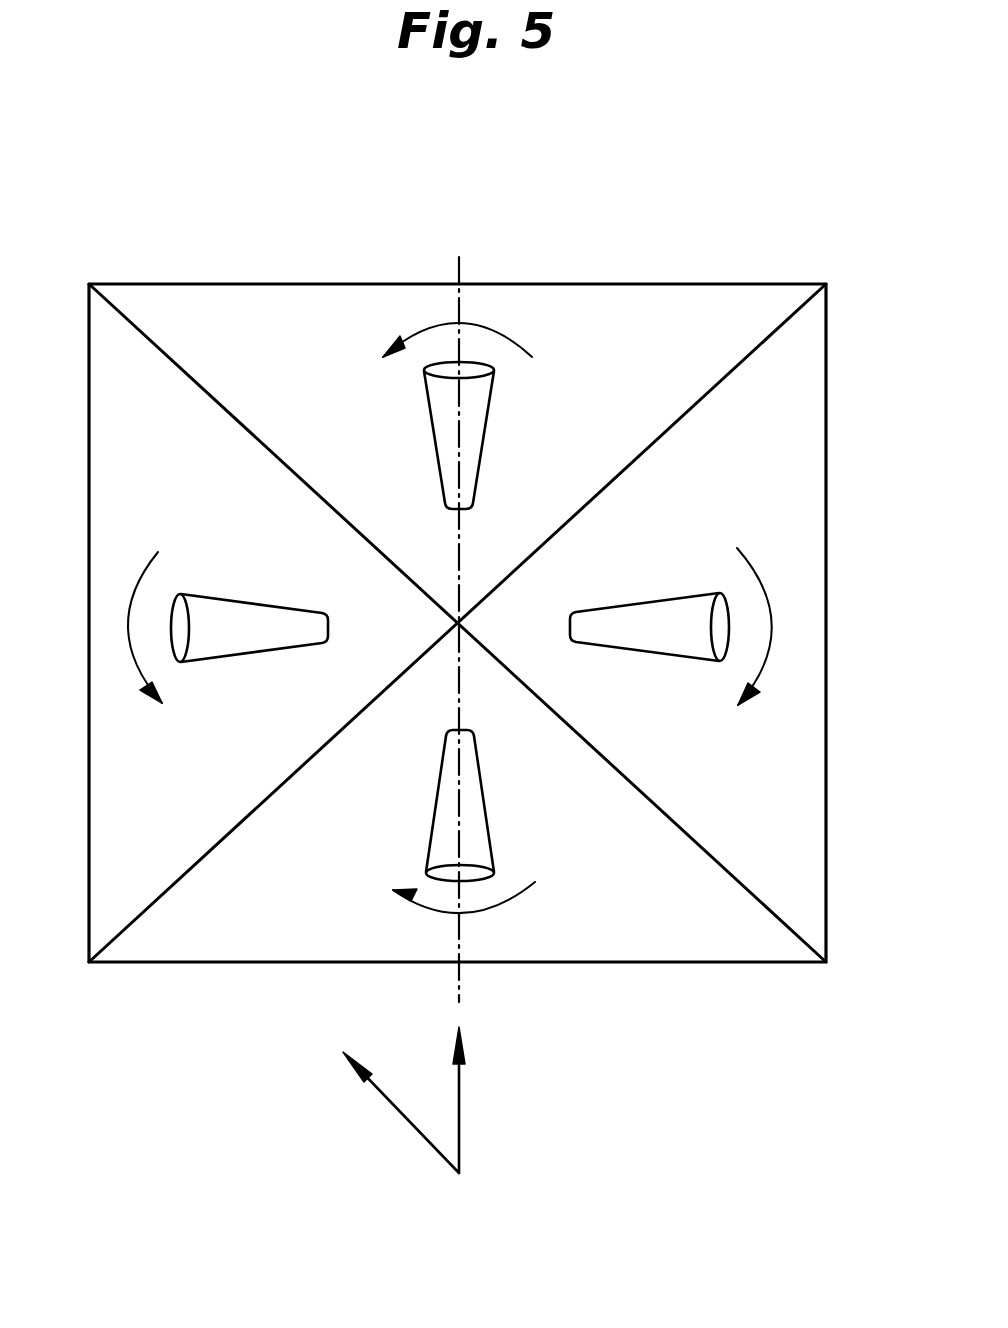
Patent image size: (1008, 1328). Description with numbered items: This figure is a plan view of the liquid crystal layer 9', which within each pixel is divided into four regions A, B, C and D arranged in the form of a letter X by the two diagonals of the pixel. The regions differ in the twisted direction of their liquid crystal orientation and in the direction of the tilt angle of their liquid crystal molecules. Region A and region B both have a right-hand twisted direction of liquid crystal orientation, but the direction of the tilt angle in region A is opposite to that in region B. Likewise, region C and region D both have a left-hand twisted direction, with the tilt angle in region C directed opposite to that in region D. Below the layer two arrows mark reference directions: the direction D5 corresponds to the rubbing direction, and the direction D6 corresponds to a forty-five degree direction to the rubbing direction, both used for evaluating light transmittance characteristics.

The liquid crystal layer 9' is at (492, 565).
The region A is at (455, 416).
The region B is at (228, 608).
The region C is at (451, 821).
The region D is at (671, 616).
The rubbing direction D5 is at (372, 1079).
The forty-five degree direction to the rubbing direction D6 is at (460, 1087).